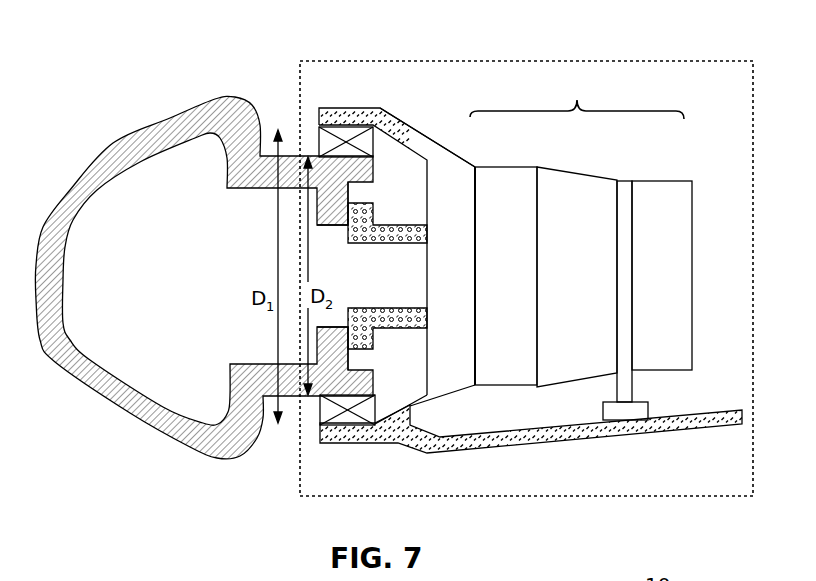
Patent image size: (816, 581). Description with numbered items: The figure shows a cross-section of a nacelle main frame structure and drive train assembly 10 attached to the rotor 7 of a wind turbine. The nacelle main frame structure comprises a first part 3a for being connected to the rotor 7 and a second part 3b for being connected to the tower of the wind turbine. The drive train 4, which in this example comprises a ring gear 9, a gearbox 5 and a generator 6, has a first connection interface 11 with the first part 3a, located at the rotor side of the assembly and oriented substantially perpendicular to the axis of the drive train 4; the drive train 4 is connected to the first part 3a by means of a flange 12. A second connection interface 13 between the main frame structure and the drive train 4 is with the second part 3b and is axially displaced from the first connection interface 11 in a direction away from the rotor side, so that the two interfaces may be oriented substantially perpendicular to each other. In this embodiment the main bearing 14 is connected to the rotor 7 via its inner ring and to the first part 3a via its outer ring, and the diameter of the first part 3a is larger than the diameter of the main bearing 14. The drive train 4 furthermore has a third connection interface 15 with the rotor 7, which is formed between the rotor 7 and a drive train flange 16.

The rotor 7 is at (135, 157).
The nacelle main frame structure and drive train assembly 10 is at (296, 76).
The main bearing 14 is at (340, 135).
The first part 3a is at (360, 122).
The first connection interface 11 is at (409, 129).
The flange 12 is at (443, 188).
The drive train 4 is at (577, 95).
The ring gear 9 is at (502, 170).
The gearbox 5 is at (567, 195).
The generator 6 is at (650, 200).
The second connection interface 13 is at (629, 429).
The third connection interface 15 is at (351, 233).
The drive train flange 16 is at (392, 233).
The second part 3b is at (527, 433).